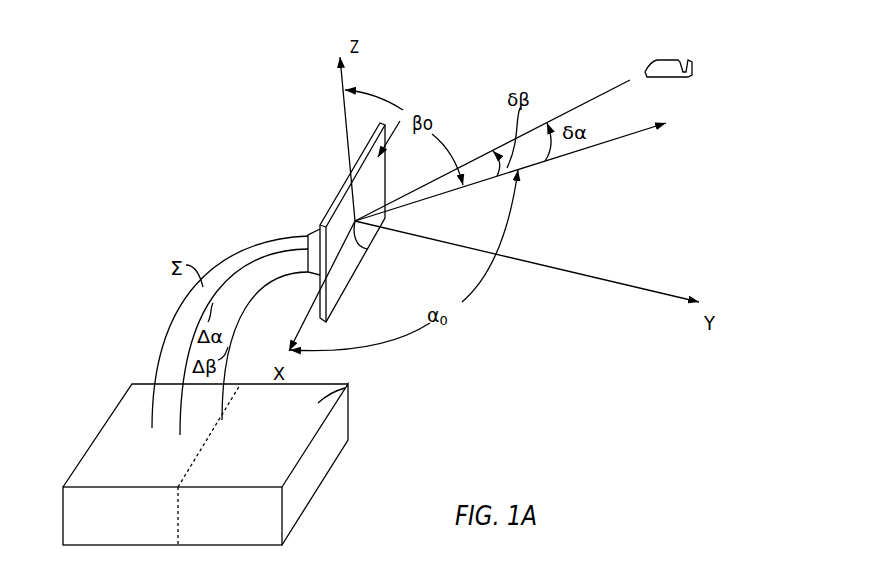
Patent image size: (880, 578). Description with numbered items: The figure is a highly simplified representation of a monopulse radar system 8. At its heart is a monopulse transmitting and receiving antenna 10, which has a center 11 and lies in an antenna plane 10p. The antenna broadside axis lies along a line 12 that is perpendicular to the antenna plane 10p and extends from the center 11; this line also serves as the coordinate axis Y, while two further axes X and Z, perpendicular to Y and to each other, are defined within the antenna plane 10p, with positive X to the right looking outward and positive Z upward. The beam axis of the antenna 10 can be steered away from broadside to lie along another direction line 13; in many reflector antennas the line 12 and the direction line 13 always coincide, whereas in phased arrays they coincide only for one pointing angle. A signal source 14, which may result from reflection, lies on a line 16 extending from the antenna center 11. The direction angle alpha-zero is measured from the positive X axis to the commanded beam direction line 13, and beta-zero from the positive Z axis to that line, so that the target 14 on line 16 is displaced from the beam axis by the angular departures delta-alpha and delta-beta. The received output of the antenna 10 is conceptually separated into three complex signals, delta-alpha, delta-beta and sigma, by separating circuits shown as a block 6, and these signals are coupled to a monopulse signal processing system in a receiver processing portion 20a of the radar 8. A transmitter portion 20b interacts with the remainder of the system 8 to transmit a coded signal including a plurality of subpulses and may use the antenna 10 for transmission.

The block 6 is at (320, 227).
The monopulse radar system 8 is at (498, 427).
The monopulse transmitting and receiving antenna 10 is at (334, 200).
The antenna plane 10p is at (418, 105).
The center 11 is at (367, 249).
The line 12 is at (537, 266).
The direction line 13 is at (640, 132).
The signal source 14 is at (672, 60).
The line 16 is at (587, 100).
The receiver processing portion 20a is at (350, 385).
The transmitter portion 20b is at (95, 438).